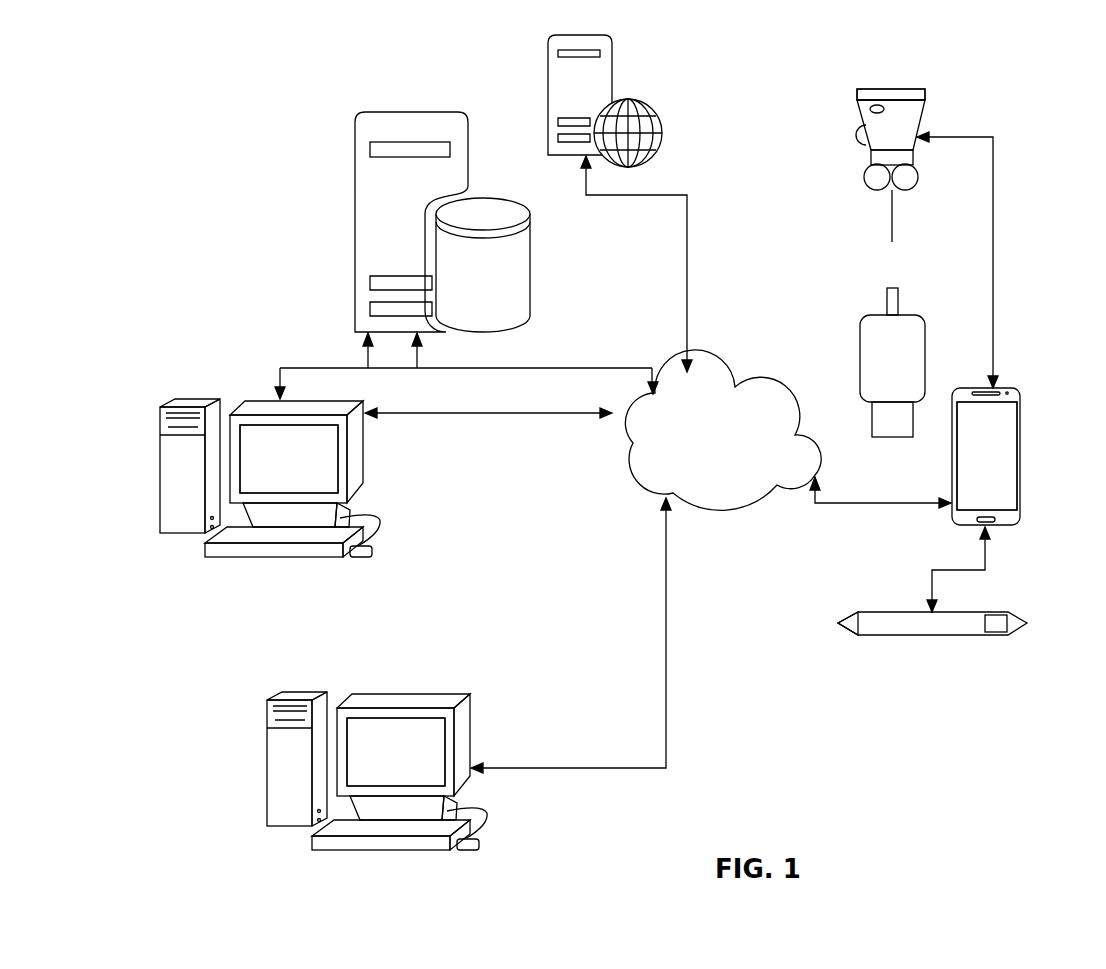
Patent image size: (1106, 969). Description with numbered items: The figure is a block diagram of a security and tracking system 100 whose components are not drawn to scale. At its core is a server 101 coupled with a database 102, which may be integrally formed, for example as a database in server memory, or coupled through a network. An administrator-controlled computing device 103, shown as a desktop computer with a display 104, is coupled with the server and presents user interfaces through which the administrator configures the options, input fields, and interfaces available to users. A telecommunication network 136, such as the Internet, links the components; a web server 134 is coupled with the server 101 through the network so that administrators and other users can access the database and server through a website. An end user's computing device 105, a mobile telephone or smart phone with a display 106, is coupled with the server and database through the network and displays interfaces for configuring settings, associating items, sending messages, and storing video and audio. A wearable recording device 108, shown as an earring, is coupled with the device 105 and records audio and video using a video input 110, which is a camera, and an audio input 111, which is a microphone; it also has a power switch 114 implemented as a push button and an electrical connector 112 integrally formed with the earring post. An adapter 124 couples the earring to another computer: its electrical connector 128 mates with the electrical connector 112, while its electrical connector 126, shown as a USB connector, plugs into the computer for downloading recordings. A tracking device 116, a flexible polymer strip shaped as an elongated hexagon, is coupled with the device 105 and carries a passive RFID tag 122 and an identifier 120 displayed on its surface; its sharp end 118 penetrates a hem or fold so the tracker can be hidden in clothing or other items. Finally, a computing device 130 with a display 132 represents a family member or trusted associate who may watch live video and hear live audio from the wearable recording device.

The security and tracking system 100 is at (265, 256).
The server 101 is at (355, 235).
The database 102 is at (533, 265).
The computing device 103 is at (281, 557).
The display 104 is at (276, 472).
The computing device 105 is at (1022, 435).
The display 106 is at (1005, 466).
The wearable recording device 108 is at (920, 120).
The video input 110 is at (893, 88).
The audio input 111 is at (870, 108).
The electrical connector 112 is at (892, 227).
The power switch 114 is at (857, 135).
The tracking device 116 is at (1013, 613).
The sharp end 118 is at (838, 623).
The identifier 120 is at (887, 625).
The passive radio-frequency identification tag 122 is at (1002, 632).
The adapter 124 is at (860, 358).
The electrical connector 126 is at (872, 422).
The electrical connector 128 is at (885, 302).
The computing device 130 is at (470, 693).
The display 132 is at (383, 767).
The web server 134 is at (612, 83).
The telecommunication network 136 is at (673, 373).